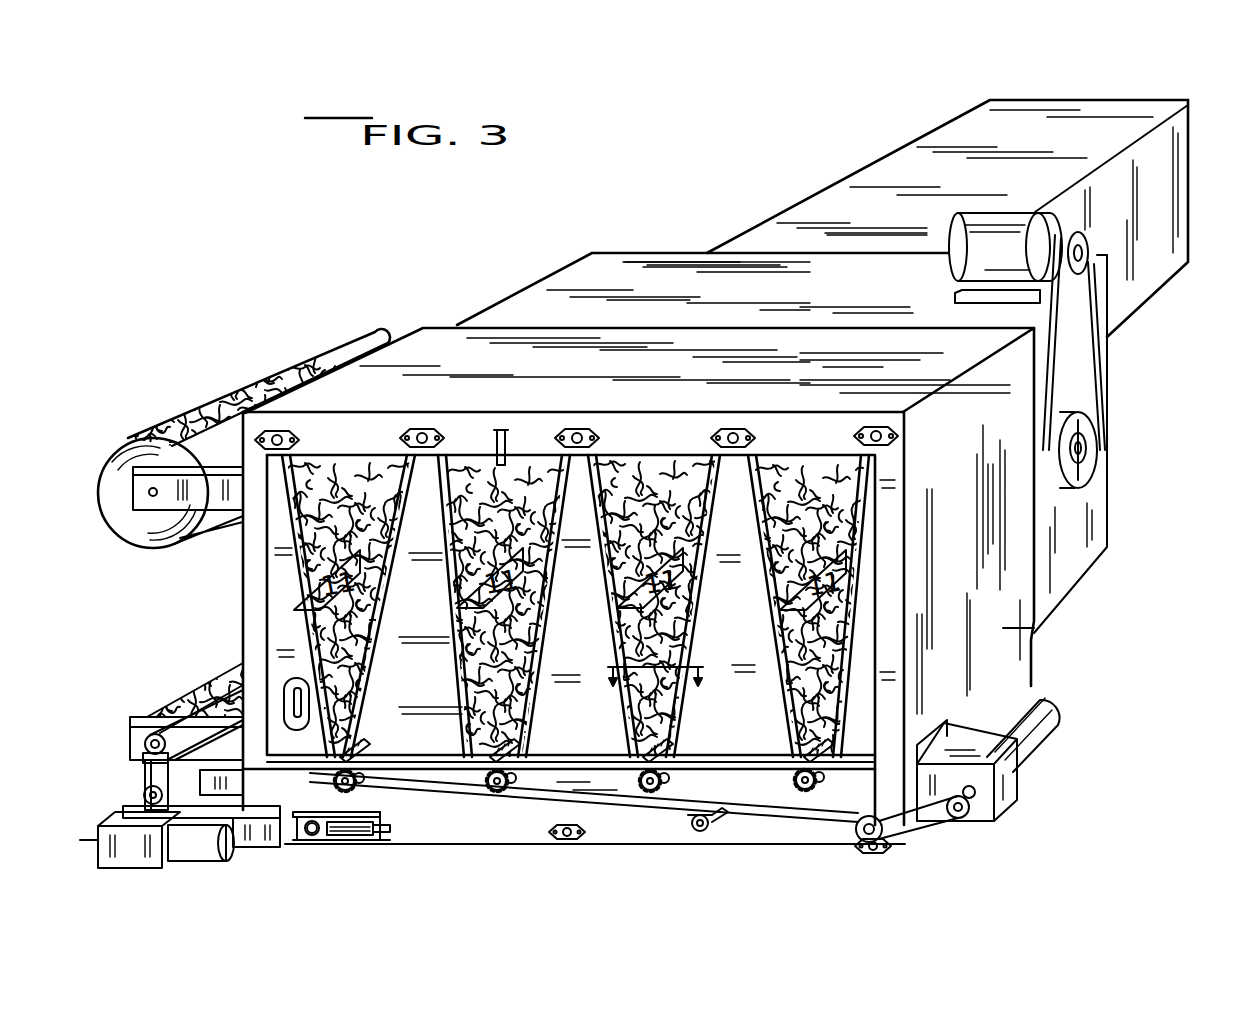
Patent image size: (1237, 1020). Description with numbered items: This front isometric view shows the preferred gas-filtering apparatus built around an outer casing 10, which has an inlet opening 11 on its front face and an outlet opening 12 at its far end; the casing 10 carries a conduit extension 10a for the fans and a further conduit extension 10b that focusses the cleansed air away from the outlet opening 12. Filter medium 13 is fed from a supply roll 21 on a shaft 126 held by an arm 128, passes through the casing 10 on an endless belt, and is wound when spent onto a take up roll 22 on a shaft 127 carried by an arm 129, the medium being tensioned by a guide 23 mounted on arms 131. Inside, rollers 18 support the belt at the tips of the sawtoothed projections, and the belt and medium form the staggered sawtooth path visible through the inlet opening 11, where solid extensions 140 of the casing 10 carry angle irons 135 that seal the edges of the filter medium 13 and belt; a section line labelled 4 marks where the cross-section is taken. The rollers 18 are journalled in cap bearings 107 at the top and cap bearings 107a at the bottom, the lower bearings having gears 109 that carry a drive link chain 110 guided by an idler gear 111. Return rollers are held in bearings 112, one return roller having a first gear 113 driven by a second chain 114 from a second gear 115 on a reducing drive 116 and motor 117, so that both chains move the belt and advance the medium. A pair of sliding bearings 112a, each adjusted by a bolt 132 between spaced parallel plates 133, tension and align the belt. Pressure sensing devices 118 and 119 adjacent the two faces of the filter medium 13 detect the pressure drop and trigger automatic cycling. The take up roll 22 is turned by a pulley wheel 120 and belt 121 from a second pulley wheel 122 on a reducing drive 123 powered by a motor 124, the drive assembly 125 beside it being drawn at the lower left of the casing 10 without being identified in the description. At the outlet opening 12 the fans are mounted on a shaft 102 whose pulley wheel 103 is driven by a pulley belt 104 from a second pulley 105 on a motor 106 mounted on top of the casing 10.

The outer casing 10 is at (875, 343).
The conduit extension 10a is at (690, 270).
The conduit extension 10b is at (905, 172).
The inlet opening 11 is at (570, 579).
The outlet opening 12 is at (1192, 187).
The filter medium 13 is at (343, 497).
The rollers 18 is at (363, 730).
The roll 21 is at (137, 433).
The take up roll 22 is at (170, 700).
The guide 23 is at (225, 765).
The section line 4- 4 is at (656, 681).
The shaft 102 is at (1083, 447).
The pulley wheel 103 is at (1083, 470).
The pulley belt 104 is at (1100, 365).
The second pulley 105 is at (1085, 265).
The motor 106 is at (1003, 230).
The cap bearings 107 is at (288, 432).
The cap bearings 107a is at (362, 754).
The gears 109 is at (332, 773).
The drive link chain 110 is at (537, 808).
The idler gear 111 is at (693, 833).
The bearings 112 is at (580, 840).
The sliding bearings 112a is at (313, 840).
The first gear 113 is at (853, 845).
The second chain 114 is at (937, 827).
The second gear 115 is at (964, 817).
The reducing drive 116 is at (1013, 757).
The motor 117 is at (1033, 710).
The pressure sensing device 118 is at (500, 430).
The pressure sensing device 119 is at (307, 680).
The pulley wheel 120 is at (127, 735).
The belt 121 is at (140, 770).
The second pulley wheel 122 is at (143, 792).
The reducing drive 123 is at (97, 840).
The motor 124 is at (183, 845).
The drive unit 125 is at (255, 835).
The shaft 126 is at (133, 492).
The shaft 127 is at (142, 720).
The arm 128 is at (170, 500).
The arm 129 is at (197, 663).
The arms 131 is at (227, 783).
The bolt 132 is at (373, 840).
The plates 133 is at (343, 813).
The angle irons 135 is at (320, 635).
The extensions 140 is at (282, 528).